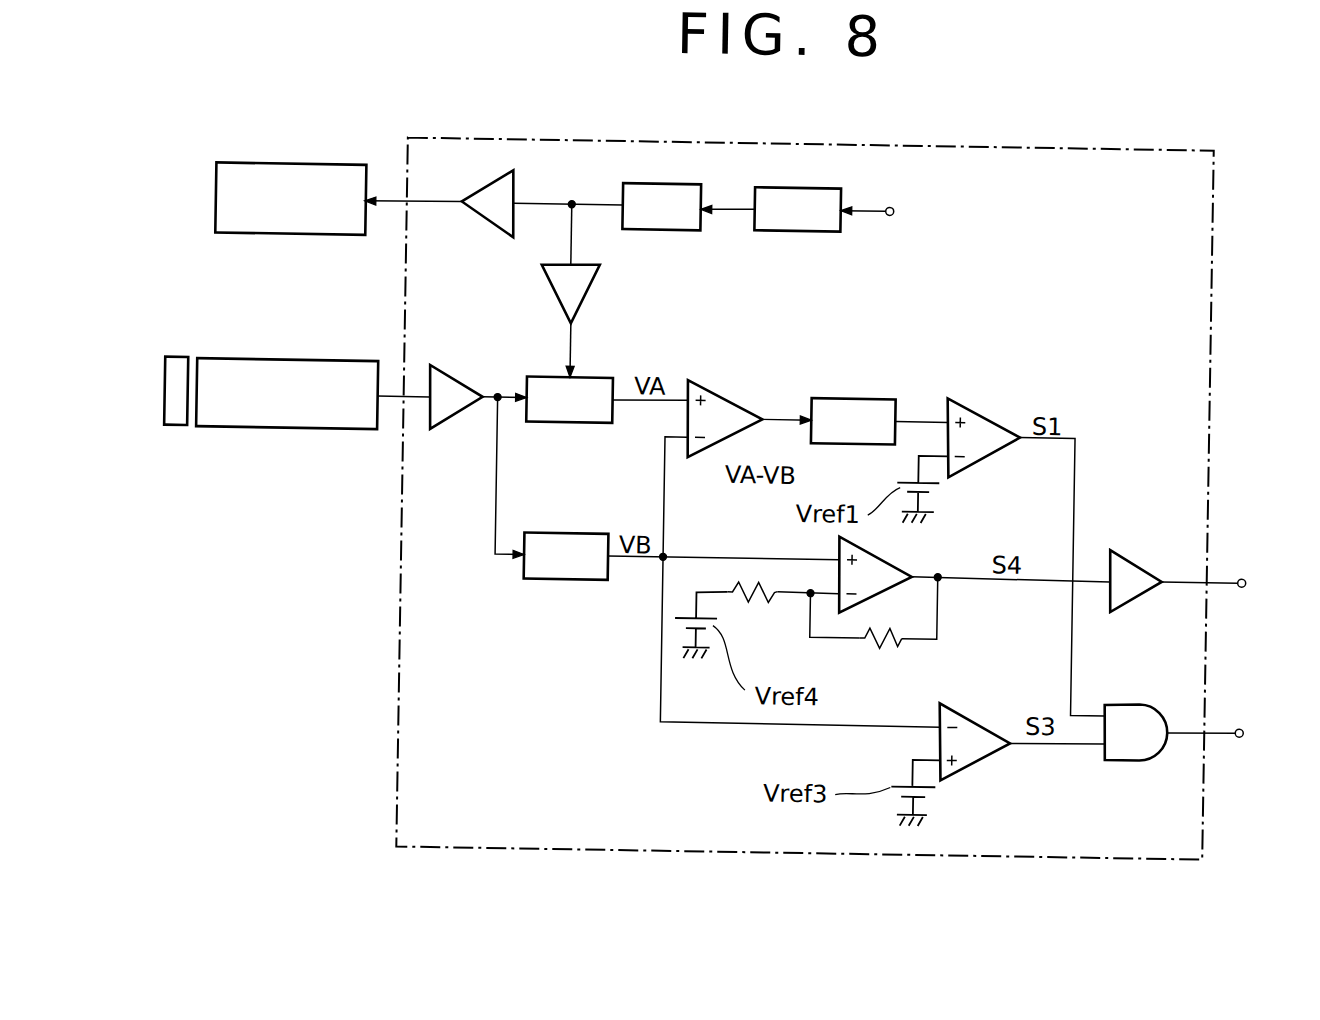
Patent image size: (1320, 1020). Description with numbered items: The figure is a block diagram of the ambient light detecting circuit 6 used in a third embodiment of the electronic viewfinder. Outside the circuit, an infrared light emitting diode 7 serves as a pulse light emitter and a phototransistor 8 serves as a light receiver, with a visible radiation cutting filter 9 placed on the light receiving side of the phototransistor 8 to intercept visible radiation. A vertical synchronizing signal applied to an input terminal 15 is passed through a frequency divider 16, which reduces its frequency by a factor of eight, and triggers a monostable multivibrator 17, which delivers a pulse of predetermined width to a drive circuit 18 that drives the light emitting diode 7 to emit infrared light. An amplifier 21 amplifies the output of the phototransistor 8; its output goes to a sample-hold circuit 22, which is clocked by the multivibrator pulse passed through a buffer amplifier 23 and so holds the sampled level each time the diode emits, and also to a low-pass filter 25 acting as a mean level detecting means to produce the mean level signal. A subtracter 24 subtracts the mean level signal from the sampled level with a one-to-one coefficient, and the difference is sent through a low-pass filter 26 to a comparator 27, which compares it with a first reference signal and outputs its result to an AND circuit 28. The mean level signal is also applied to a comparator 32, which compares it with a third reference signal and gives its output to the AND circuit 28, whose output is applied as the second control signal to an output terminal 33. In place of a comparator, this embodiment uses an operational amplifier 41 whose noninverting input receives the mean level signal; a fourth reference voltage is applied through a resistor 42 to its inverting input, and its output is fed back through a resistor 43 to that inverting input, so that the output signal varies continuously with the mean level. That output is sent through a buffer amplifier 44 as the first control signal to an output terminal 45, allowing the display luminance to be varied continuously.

The ambient light detecting circuit 6 is at (1211, 378).
The infrared light emitting diode 7 is at (289, 245).
The phototransistor 8 is at (292, 437).
The visible radiation cutting filter 9 is at (175, 435).
The input terminal 15 is at (886, 215).
The 1/8 frequency divider 16 is at (801, 232).
The monostable multivibrator 17 is at (686, 232).
The drive circuit 18 is at (486, 235).
The amplifier 21 is at (446, 432).
The sample-hold circuit 22 is at (579, 427).
The buffer amplifier 23 is at (587, 303).
The subtracter 24 is at (736, 396).
The low-pass filter 25 is at (576, 584).
The low-pass filter 26 is at (853, 397).
The comparator 27 is at (984, 412).
The AND circuit 28 is at (1138, 700).
The comparator 32 is at (994, 717).
The output terminal 33 is at (1245, 731).
The operational amplifier 41 is at (886, 557).
The resistor 42 is at (757, 598).
The resistor 43 is at (882, 642).
The buffer amplifier 44 is at (1141, 544).
The output terminal 45 is at (1245, 581).